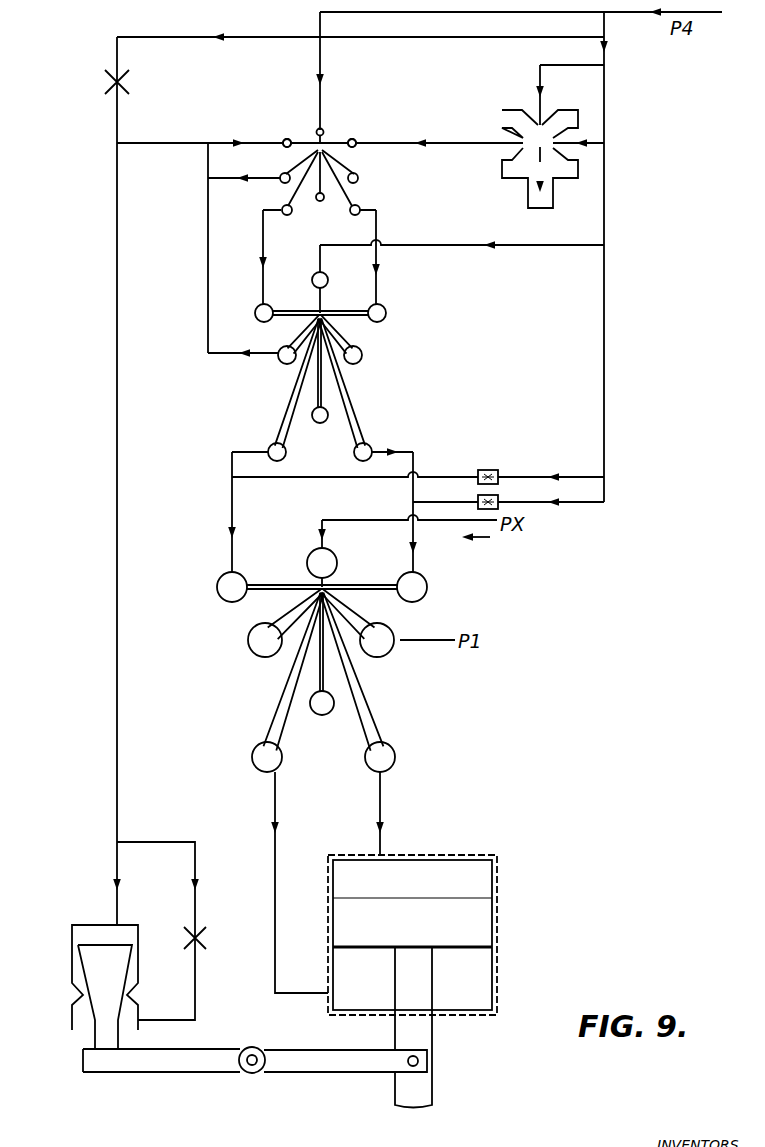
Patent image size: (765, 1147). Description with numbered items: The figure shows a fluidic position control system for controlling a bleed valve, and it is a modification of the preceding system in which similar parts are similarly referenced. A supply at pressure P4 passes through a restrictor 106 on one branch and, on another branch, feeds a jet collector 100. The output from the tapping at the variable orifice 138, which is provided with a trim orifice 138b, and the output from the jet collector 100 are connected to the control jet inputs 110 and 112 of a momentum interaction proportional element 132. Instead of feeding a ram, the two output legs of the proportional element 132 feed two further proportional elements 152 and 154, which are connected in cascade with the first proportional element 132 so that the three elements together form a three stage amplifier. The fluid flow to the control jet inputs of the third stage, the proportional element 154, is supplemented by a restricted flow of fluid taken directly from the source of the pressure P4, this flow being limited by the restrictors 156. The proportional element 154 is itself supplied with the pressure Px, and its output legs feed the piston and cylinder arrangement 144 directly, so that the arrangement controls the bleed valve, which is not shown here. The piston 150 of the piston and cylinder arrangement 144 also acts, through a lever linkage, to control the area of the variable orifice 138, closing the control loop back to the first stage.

The jet collector 100 is at (490, 113).
The restrictor valve 106 is at (110, 80).
The control jet input 110 is at (286, 139).
The control jet input 112 is at (353, 139).
The momentum interaction proportional element 132 is at (370, 174).
The proportional element 152 is at (384, 343).
The proportional element 154 is at (243, 661).
The restrictors 156 is at (499, 495).
The piston 150 is at (487, 931).
The piston and cylinder arrangement 144 is at (450, 1030).
The variable orifice 138 is at (72, 950).
The trim orifice 138b is at (203, 946).